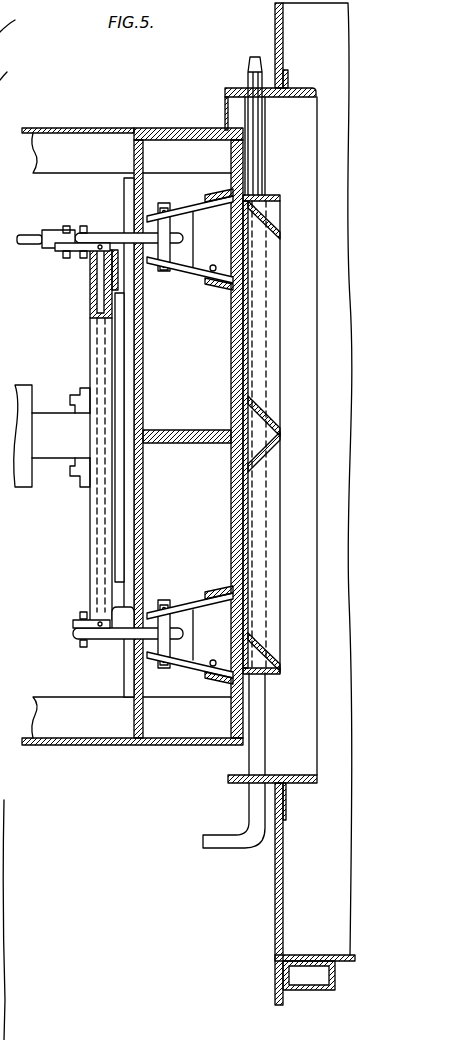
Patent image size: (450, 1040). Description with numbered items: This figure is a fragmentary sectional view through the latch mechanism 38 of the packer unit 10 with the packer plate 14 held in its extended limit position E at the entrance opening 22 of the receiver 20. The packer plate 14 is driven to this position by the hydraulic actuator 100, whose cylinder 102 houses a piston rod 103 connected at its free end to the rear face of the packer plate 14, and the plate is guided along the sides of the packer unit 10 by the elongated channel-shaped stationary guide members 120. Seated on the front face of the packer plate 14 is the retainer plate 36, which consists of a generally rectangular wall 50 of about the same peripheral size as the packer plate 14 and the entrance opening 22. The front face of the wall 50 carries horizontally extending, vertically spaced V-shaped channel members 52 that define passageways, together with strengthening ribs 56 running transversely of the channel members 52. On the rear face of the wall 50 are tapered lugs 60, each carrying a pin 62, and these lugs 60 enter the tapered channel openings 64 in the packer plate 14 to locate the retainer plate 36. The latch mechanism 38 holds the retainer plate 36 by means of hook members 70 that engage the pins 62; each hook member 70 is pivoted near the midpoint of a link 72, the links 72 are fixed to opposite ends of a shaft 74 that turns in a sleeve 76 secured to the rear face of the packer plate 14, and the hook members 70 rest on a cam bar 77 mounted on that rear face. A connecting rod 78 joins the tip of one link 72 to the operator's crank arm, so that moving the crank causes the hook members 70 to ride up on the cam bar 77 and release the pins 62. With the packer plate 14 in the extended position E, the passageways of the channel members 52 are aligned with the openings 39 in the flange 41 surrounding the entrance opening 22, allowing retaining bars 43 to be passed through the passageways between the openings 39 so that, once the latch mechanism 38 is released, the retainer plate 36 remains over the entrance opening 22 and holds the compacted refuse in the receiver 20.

The packer unit 10 is at (133, 127).
The packer plate 14 is at (226, 150).
The receiver 20 is at (36, 17).
The entrance opening 22 is at (231, 93).
The retainer plate 36 is at (245, 188).
The latch mechanism 38 is at (112, 641).
The openings 39 is at (4, 870).
The flange 41 is at (4, 912).
The retaining bars 43 is at (258, 132).
The rectangular wall 50 is at (245, 348).
The V-shaped channel members 52 is at (283, 522).
The strengthening ribs 56 is at (270, 212).
The tapered lugs 60 is at (190, 212).
The pins 62 is at (163, 271).
The tapered channel openings 64 is at (213, 272).
The hook members 70 is at (117, 238).
The links 72 is at (58, 251).
The shaft 74 is at (99, 292).
The sleeve 76 is at (92, 338).
The cam bar 77 is at (124, 184).
The connecting rod 78 is at (28, 235).
The hydraulic actuator 100 is at (26, 491).
The cylinder 102 is at (27, 385).
The piston rod 103 is at (50, 412).
The stationary guide members 120 is at (62, 168).
The extended limit position E is at (245, 300).